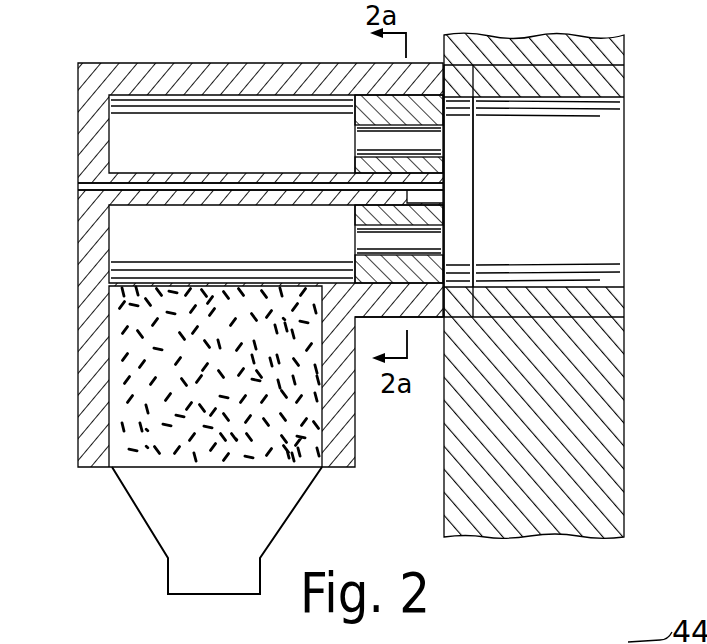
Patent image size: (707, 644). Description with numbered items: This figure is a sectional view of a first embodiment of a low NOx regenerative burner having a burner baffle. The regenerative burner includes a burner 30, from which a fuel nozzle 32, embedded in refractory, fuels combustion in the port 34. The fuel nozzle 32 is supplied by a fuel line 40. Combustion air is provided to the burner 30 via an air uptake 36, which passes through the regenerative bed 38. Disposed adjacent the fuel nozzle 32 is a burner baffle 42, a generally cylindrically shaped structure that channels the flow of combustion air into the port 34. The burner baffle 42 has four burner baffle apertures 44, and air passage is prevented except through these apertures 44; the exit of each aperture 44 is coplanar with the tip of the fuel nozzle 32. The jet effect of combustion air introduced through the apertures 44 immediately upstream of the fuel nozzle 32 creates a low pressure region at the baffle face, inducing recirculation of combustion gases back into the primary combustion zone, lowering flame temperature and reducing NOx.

The burner 30 is at (178, 57).
The fuel nozzle 32 is at (445, 205).
The port 34 is at (606, 156).
The air uptake 36 is at (150, 505).
The regenerative bed 38 is at (128, 390).
The fuel line 40 is at (78, 205).
The burner baffle 42 is at (372, 108).
The burner baffle apertures 44 is at (357, 137).